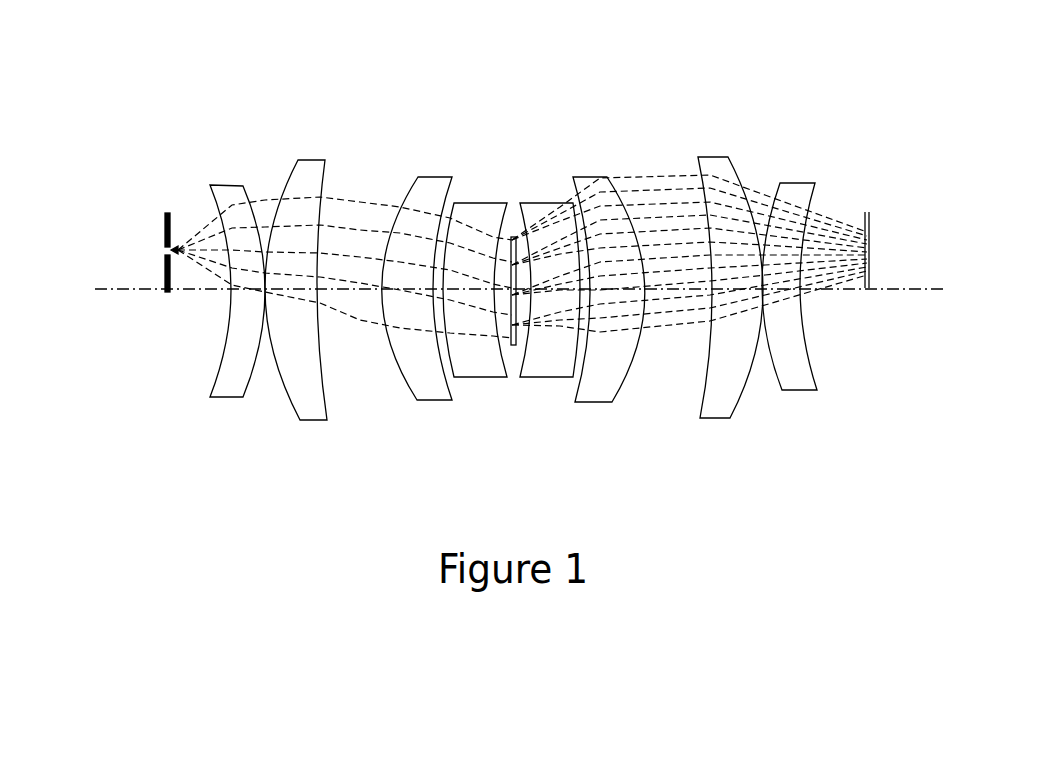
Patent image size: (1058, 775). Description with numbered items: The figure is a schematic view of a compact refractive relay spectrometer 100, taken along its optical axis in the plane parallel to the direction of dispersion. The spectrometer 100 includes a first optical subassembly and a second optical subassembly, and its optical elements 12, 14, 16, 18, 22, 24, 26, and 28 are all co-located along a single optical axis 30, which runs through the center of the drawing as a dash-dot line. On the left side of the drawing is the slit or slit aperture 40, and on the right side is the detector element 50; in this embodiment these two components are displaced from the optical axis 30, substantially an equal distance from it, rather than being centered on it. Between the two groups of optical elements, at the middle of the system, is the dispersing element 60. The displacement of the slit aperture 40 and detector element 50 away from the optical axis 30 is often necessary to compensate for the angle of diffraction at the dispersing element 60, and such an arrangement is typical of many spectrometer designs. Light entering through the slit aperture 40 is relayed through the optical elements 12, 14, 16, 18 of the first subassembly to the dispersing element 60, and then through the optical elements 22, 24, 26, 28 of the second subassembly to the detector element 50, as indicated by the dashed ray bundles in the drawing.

The refractive relay spectrometer 100 is at (138, 73).
The optical element 12 is at (250, 381).
The optical element 14 is at (315, 422).
The optical element 16 is at (408, 380).
The optical element 18 is at (487, 380).
The optical element 22 is at (545, 376).
The optical element 24 is at (627, 378).
The optical element 26 is at (712, 420).
The optical element 28 is at (777, 380).
The optical axis 30 is at (133, 290).
The slit aperture 40 is at (165, 224).
The detector element 50 is at (868, 212).
The dispersing element 60 is at (513, 236).